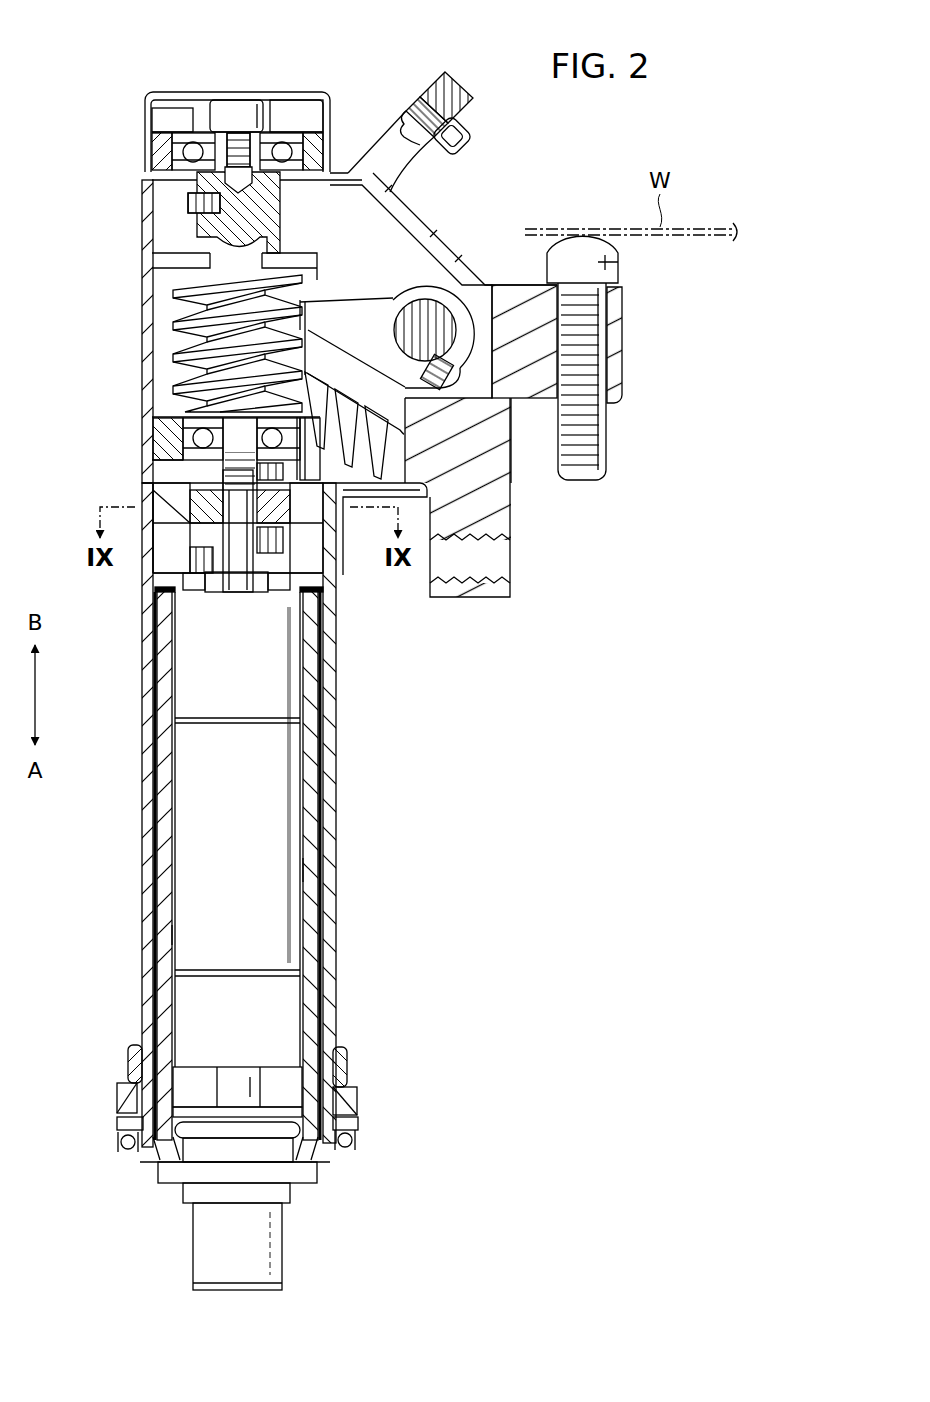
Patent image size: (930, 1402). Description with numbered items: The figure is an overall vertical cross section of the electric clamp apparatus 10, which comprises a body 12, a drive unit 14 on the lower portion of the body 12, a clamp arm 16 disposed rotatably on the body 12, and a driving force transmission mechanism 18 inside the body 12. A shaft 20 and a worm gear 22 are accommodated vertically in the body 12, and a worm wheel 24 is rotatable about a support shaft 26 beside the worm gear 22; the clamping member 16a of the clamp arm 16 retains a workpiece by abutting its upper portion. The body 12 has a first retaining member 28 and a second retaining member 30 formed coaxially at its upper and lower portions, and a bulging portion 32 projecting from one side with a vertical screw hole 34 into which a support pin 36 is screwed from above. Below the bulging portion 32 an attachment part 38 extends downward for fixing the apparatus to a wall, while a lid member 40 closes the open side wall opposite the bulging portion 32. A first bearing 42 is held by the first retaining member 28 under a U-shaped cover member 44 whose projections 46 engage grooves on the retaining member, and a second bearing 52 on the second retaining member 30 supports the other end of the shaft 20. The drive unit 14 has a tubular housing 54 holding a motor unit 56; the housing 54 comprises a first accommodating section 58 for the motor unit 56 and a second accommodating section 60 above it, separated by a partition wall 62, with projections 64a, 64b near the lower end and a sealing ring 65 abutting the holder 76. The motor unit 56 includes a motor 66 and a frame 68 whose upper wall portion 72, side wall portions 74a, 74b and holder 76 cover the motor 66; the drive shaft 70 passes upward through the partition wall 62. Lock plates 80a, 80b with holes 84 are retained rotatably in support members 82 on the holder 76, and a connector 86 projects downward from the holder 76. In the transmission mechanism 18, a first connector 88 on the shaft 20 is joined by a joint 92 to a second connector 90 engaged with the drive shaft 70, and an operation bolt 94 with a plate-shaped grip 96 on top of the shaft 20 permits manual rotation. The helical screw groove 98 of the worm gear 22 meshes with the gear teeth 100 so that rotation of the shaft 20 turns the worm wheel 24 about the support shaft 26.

The electric clamp apparatus 10 is at (690, 114).
The body 12 is at (452, 222).
The drive unit 14 is at (354, 853).
The clamp arm 16 is at (434, 70).
The clamping member 16a is at (472, 142).
The driving force transmission mechanism 18 is at (166, 306).
The shaft 20 is at (250, 216).
The worm gear 22 is at (184, 334).
The worm wheel 24 is at (367, 294).
The support shaft 26 is at (420, 322).
The first retaining member 28 is at (158, 165).
The second retaining member 30 is at (186, 454).
The bulging portion 32 is at (518, 284).
The screw hole 34 is at (588, 330).
The support pin 36 is at (600, 262).
The attachment part 38 is at (510, 505).
The lid member 40 is at (145, 210).
The first bearing 42 is at (182, 136).
The cover member 44 is at (312, 88).
The projections 46 is at (160, 140).
The second bearing 52 is at (192, 420).
The housing 54 is at (146, 885).
The motor unit 56 is at (316, 792).
The first accommodating section 58 is at (310, 826).
The second accommodating section 60 is at (204, 582).
The partition wall 62 is at (312, 575).
The projection 64a is at (358, 1122).
The projection 64b is at (120, 1124).
The sealing ring 65 is at (300, 1150).
The motor 66 is at (190, 778).
The frame 68 is at (318, 690).
The drive shaft 70 is at (240, 552).
The upper wall portion 72 is at (194, 582).
The side wall portion 74a is at (310, 868).
The side wall portion 74b is at (165, 936).
The holder 76 is at (152, 1165).
The lock plate 80a is at (343, 1050).
The lock plate 80b is at (132, 1048).
The support members 82 is at (120, 1148).
The holes 84 is at (125, 1100).
The connector 86 is at (257, 1247).
The first connector 88 is at (192, 468).
The second connector 90 is at (194, 556).
The joint 92 is at (212, 517).
The operation bolt 94 is at (248, 108).
The grip 96 is at (235, 106).
The screw groove 98 is at (300, 328).
The gear teeth 100 is at (340, 456).